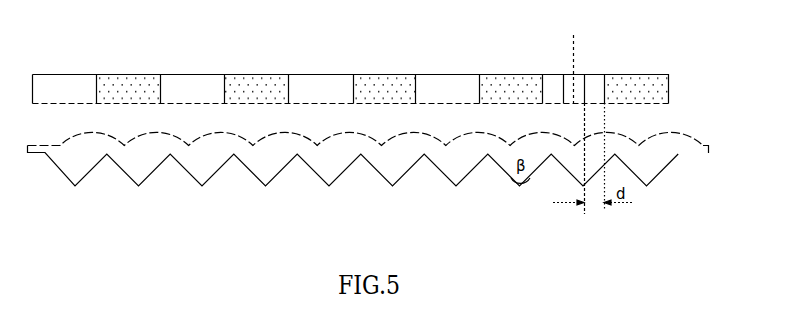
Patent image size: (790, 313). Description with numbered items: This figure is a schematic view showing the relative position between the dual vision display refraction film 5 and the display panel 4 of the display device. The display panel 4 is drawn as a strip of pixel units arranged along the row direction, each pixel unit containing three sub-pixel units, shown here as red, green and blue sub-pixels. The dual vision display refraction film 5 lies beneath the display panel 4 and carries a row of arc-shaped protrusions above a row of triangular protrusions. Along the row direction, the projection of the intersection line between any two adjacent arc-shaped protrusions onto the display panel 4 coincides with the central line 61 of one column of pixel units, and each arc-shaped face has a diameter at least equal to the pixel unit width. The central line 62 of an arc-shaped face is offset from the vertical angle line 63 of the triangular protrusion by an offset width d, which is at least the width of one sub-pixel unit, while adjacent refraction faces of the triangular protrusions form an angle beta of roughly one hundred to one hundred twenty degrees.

The display panel 4 is at (200, 85).
The dual vision display refraction film 5 is at (146, 152).
The central line of one column pixel units 61 is at (574, 47).
The central line of the arc-shaped face of the arc-shaped protrusion 62 is at (603, 218).
The vertical angle line of the triangular protrusion 63 is at (583, 218).